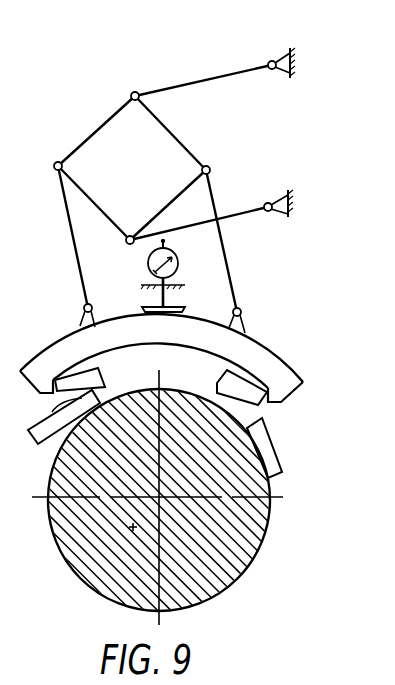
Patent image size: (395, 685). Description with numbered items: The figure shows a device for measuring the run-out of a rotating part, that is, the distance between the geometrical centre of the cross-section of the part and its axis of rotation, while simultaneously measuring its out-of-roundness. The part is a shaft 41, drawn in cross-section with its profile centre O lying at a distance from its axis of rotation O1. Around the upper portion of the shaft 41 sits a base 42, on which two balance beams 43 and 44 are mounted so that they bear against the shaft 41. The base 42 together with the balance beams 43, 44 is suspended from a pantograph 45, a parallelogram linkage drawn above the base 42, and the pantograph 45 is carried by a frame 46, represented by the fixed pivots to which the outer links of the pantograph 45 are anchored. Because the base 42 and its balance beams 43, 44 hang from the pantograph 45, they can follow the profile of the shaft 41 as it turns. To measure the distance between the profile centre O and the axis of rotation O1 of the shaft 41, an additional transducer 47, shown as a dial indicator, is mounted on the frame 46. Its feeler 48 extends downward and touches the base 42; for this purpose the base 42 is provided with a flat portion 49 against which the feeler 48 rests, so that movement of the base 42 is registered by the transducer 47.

The shaft 41 is at (67, 552).
The base 42 is at (268, 357).
The balance beam 43 is at (280, 430).
The balance beam 44 is at (281, 463).
The pantograph 45 is at (197, 81).
The frame 46 is at (298, 60).
The additional transducer 47 is at (148, 263).
The feeler 48 is at (158, 300).
The flat portion 49 is at (184, 307).